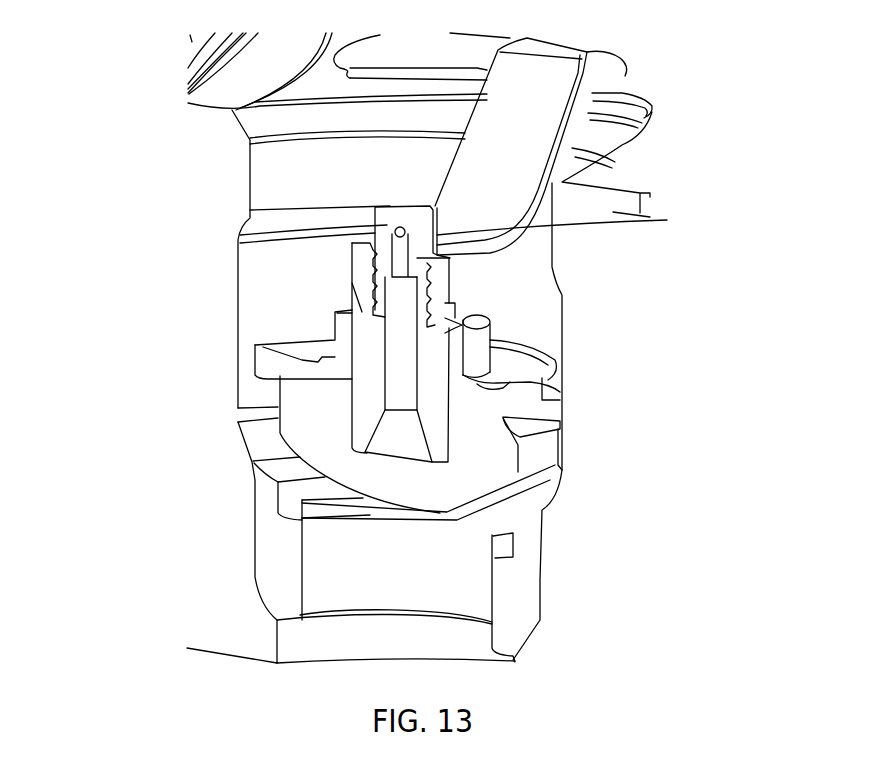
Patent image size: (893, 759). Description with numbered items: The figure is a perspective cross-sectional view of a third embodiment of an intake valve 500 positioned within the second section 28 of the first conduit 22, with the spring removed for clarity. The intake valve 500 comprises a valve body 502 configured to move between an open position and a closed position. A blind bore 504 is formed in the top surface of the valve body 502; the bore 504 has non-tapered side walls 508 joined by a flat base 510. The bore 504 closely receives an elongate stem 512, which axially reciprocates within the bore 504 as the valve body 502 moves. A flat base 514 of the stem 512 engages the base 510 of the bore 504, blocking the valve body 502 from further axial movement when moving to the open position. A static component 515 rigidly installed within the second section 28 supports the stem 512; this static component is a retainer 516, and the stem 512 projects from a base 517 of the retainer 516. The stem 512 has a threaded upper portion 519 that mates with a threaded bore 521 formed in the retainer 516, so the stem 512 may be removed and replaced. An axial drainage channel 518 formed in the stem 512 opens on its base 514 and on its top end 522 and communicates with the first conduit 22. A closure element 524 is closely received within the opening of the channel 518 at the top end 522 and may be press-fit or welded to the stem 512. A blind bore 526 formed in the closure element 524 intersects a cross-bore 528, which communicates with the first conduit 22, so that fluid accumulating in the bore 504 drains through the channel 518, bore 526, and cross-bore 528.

The first conduit 22 is at (252, 168).
The second section 28 is at (274, 187).
The intake valve 500 is at (297, 390).
The valve body 502 is at (320, 440).
The blind bore 504 is at (432, 440).
The non-tapered side walls 508 is at (435, 387).
The flat base 510 is at (410, 455).
The elongate stem 512 is at (373, 373).
The flat base 514 is at (447, 464).
The static component 515 is at (550, 87).
The retainer 516 is at (530, 136).
The base 517 is at (402, 257).
The axial drainage channel 518 is at (406, 382).
The threaded upper portion 519 is at (365, 288).
The threaded bore 521 is at (558, 423).
The top end 522 is at (639, 217).
The closure element 524 is at (387, 218).
The blind bore 526 is at (449, 302).
The cross-bore 528 is at (395, 235).